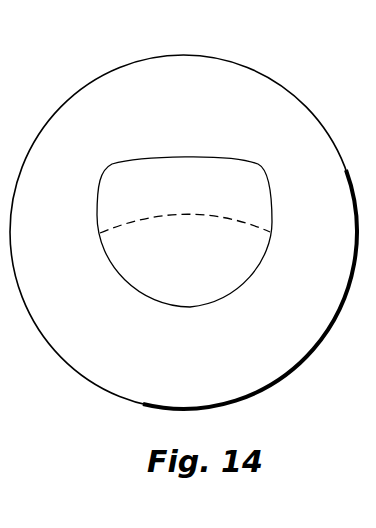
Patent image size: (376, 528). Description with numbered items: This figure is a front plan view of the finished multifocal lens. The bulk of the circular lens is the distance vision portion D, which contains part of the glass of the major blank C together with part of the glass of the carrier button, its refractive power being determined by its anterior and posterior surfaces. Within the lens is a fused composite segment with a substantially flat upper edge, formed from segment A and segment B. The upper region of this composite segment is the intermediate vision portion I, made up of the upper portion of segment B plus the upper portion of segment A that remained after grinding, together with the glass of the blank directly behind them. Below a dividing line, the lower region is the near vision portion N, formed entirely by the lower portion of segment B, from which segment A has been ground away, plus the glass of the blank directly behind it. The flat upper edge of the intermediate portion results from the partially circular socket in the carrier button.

The distance vision portion D is at (123, 103).
The major blank C is at (52, 349).
The segment A is at (101, 184).
The segment B is at (108, 265).
The intermediate vision portion I is at (213, 190).
The near vision portion N is at (170, 269).